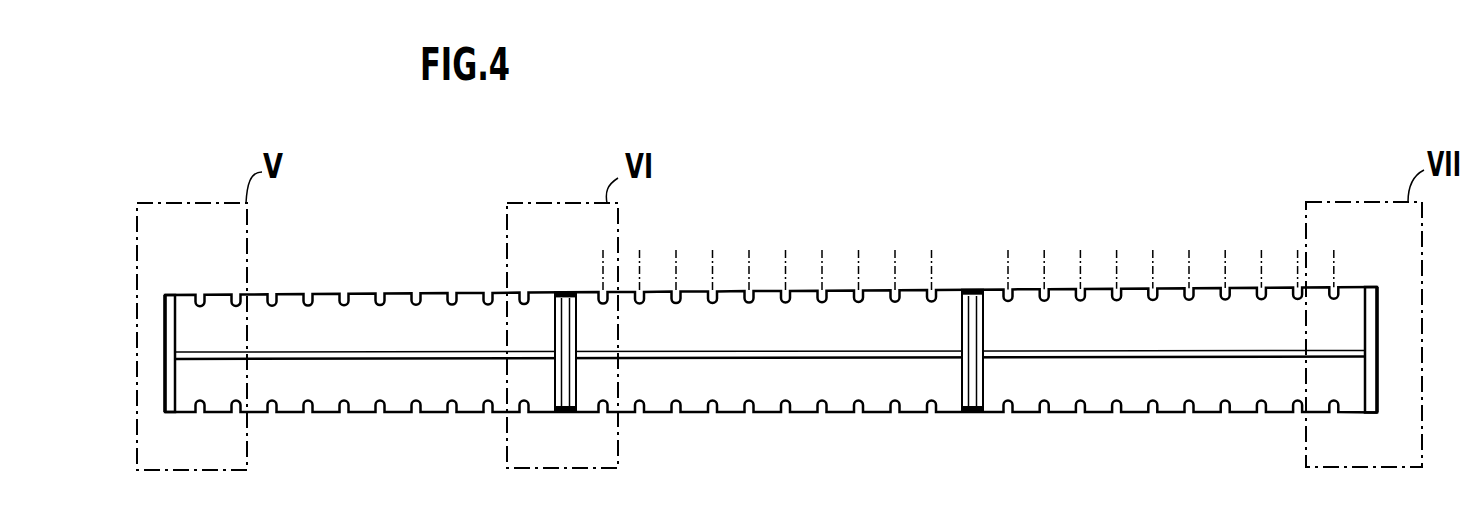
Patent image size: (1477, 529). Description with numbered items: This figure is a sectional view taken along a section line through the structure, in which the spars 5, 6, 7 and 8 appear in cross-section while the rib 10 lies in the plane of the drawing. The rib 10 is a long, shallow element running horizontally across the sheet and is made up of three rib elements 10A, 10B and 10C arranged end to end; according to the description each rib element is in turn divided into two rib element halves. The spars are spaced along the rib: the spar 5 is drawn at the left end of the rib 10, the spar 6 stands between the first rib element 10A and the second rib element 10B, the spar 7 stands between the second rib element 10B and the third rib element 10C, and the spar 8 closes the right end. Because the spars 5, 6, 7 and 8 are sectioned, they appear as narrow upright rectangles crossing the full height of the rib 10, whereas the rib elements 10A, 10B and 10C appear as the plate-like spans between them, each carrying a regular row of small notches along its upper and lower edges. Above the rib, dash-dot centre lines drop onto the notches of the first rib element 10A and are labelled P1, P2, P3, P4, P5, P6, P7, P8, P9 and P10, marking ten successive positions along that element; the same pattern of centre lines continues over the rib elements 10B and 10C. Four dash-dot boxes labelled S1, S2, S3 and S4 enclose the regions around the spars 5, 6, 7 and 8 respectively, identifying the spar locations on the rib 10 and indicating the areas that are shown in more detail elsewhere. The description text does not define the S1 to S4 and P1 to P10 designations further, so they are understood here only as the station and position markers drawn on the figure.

The spar 5 is at (165, 322).
The spar 6 is at (570, 385).
The spar 7 is at (981, 392).
The spar 8 is at (1375, 367).
The rib 10 is at (880, 238).
The rib element 10A is at (343, 434).
The rib element 10B is at (883, 444).
The rib element 10C is at (1218, 441).
The section S1 is at (166, 295).
The section S2 is at (567, 292).
The section S3 is at (972, 290).
The section S4 is at (1373, 287).
The position P1 is at (200, 295).
The position P2 is at (236, 294).
The position P3 is at (272, 294).
The position P4 is at (308, 294).
The position P5 is at (344, 294).
The position P6 is at (380, 294).
The position P7 is at (416, 293).
The position P8 is at (452, 293).
The position P9 is at (488, 293).
The position P10 is at (524, 293).